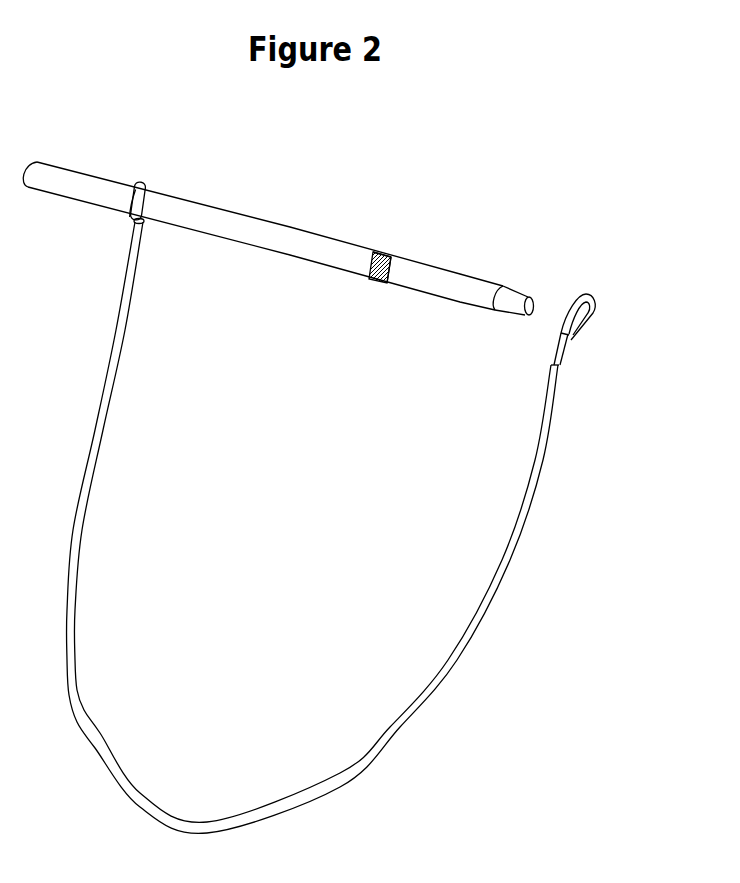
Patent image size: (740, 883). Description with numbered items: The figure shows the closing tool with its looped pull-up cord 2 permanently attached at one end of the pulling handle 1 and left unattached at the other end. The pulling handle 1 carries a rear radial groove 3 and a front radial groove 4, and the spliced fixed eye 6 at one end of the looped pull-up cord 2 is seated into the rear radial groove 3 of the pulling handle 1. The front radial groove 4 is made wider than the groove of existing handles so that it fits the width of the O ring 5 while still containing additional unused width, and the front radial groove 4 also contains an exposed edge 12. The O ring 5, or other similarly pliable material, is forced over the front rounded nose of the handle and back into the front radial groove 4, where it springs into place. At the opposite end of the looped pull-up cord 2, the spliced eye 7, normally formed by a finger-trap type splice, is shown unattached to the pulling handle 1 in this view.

The pulling handle 1 is at (310, 232).
The looped pull-up cord 2 is at (128, 336).
The rear radial groove 3 is at (150, 192).
The front radial groove 4 is at (387, 283).
The O ring 5 is at (382, 253).
The spliced fixed eye 6 is at (135, 220).
The spliced eye 7 is at (591, 318).
The exposed edge 12 is at (395, 259).